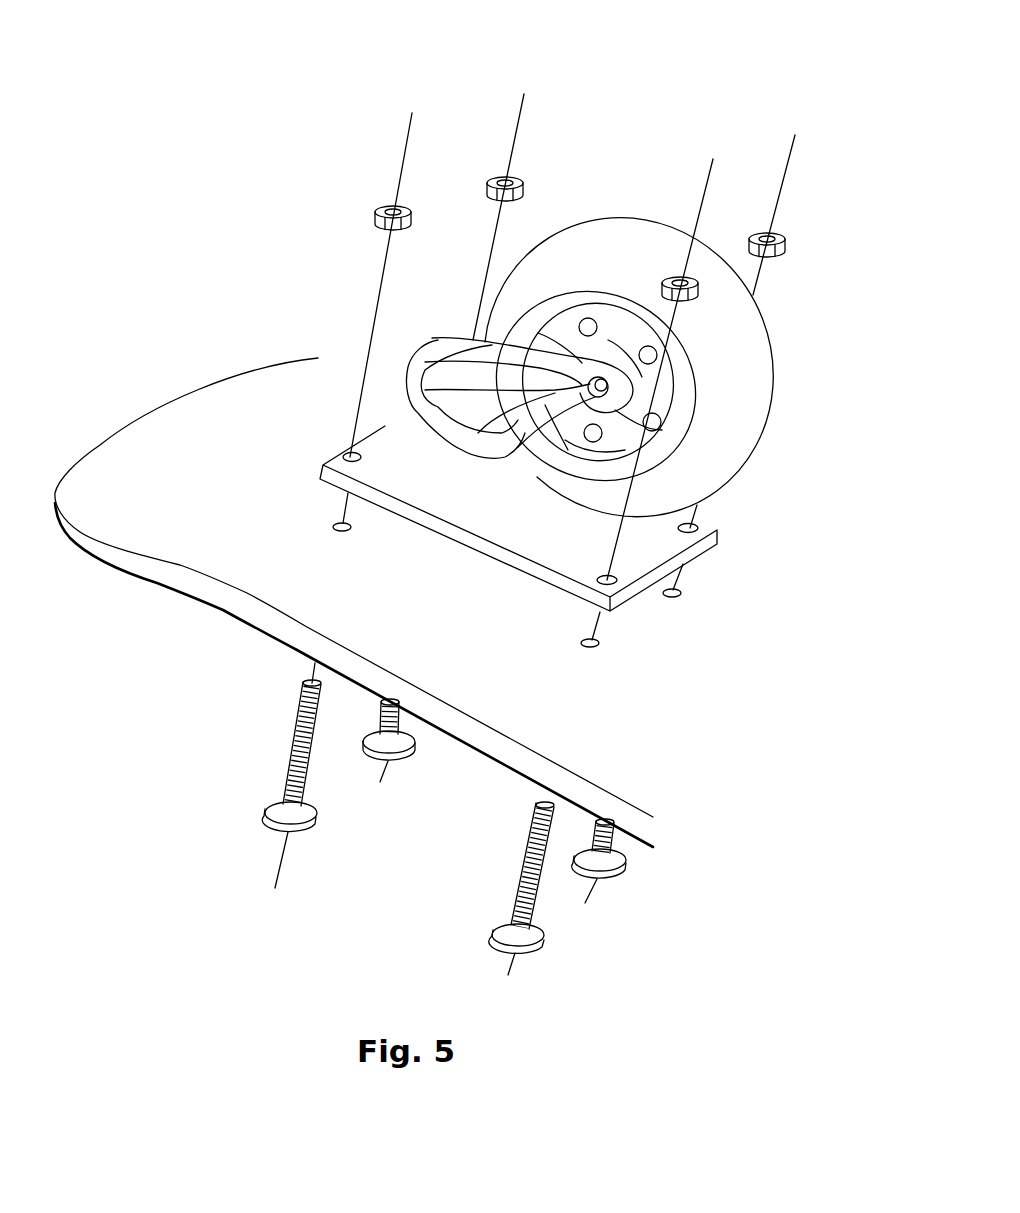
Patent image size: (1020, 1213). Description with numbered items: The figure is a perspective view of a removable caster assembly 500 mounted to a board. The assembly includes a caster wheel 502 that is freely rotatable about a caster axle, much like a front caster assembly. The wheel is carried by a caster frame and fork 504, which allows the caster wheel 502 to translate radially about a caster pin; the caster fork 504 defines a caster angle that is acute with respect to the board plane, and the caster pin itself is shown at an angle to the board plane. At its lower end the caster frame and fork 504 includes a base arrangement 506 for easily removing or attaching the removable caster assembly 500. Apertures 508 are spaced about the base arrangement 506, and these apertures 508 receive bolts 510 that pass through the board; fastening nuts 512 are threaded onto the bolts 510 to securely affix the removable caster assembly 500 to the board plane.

The removable caster assembly 500 is at (628, 148).
The caster wheel 502 is at (777, 378).
The caster frame and fork 504 is at (413, 340).
The base arrangement 506 is at (647, 583).
The apertures 508 is at (350, 457).
The bolts 510 is at (288, 763).
The fastening nuts 512 is at (381, 207).